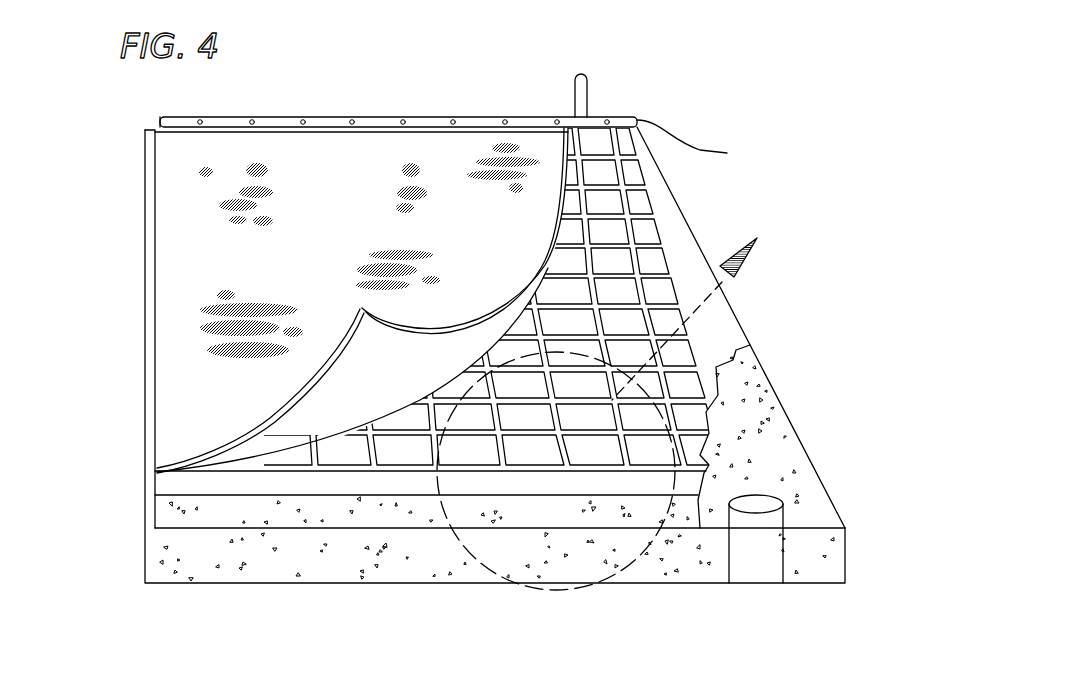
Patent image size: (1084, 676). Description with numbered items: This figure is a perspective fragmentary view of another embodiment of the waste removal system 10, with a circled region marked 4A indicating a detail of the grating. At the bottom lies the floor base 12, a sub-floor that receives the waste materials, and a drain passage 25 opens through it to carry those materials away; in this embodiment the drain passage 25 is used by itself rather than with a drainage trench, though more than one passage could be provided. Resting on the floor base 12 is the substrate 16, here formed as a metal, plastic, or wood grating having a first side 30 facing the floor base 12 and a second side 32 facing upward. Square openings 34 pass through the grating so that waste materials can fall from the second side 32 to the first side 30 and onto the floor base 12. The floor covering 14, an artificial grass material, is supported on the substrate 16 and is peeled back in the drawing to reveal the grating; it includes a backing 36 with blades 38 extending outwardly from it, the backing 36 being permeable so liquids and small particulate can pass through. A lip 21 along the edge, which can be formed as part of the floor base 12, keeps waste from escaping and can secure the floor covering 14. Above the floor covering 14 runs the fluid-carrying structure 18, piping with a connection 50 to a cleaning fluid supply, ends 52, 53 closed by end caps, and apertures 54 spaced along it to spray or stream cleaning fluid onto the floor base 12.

The waste removal system 10 is at (675, 100).
The floor base 12 is at (258, 558).
The floor covering 14 is at (331, 190).
The substrate 16 is at (437, 478).
The fluid-carrying structure 18 is at (367, 117).
The lip 21 is at (150, 292).
The drain passage 25 is at (763, 495).
The first side 30 is at (493, 494).
The second side 32 is at (565, 462).
The openings 34 is at (583, 462).
The backing 36 is at (340, 398).
The blades 38 is at (428, 270).
The connection 50 is at (590, 88).
The end 52 is at (160, 121).
The end 53 is at (696, 142).
The apertures 54 is at (450, 117).
The detail view indicator 4A is at (612, 403).